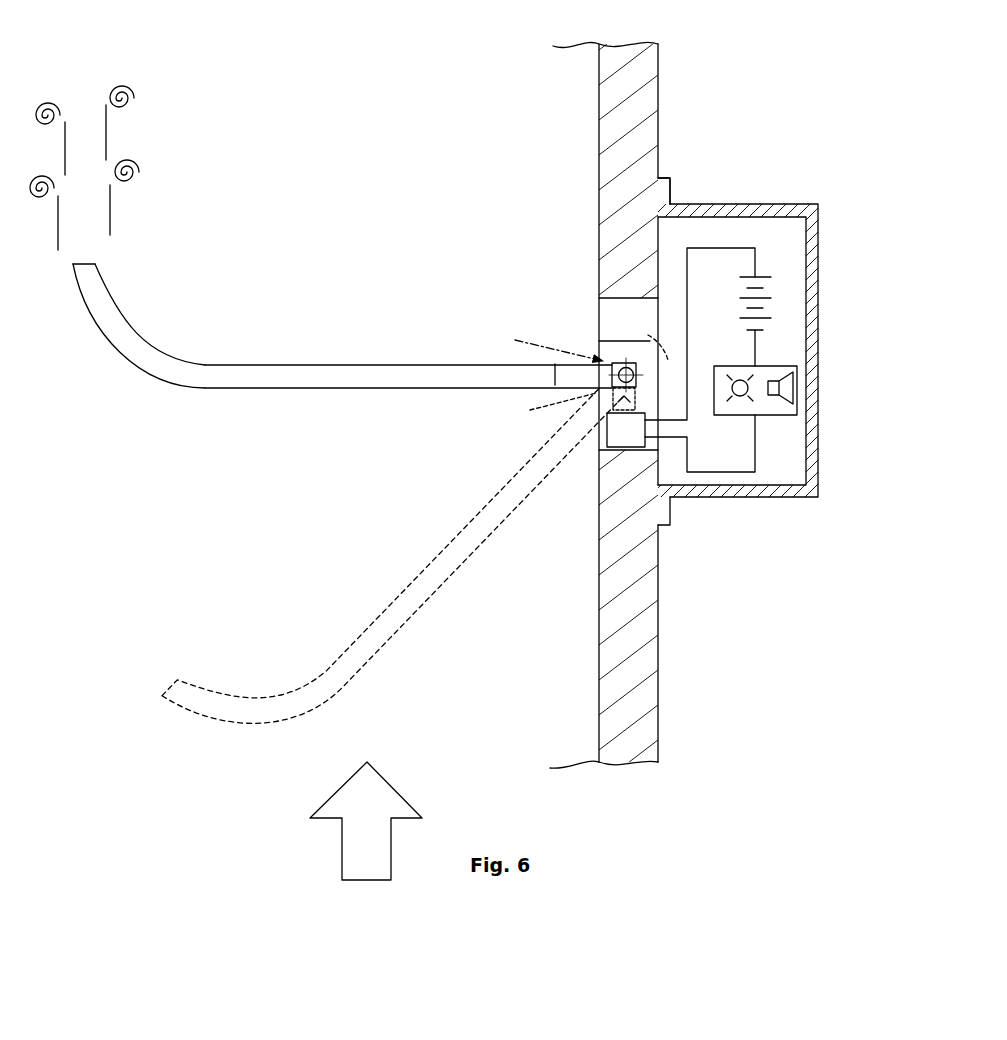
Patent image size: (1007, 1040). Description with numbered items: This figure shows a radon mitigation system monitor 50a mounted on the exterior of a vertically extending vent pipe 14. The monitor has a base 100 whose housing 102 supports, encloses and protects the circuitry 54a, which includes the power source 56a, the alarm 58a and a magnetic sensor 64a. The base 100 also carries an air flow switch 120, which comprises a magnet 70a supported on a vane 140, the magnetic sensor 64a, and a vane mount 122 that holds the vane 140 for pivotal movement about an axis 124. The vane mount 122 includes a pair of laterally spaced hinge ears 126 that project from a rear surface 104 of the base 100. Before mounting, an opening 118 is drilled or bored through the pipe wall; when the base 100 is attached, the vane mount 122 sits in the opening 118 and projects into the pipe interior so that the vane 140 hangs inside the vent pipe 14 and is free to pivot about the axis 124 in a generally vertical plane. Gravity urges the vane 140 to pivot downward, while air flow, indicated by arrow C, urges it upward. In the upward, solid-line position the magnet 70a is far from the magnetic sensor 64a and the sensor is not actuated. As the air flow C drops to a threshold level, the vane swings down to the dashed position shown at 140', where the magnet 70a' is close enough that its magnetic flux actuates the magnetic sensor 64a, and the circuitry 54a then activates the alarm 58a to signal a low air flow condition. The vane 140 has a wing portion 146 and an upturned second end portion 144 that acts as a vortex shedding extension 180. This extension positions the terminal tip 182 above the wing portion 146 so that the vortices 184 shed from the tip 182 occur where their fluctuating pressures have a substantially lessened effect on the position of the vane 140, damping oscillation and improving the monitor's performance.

The vent pipe 14 is at (628, 113).
The radon mitigation system monitor 50a is at (756, 277).
The circuitry 54a is at (749, 242).
The power source 56a is at (772, 293).
The alarm 58a is at (775, 362).
The magnetic sensor 64a is at (627, 436).
The magnet 70a is at (541, 408).
The magnet in threshold position 70a' is at (622, 321).
The base 100 is at (752, 334).
The housing 102 is at (787, 265).
The rear surface 104 is at (658, 462).
The opening 118 is at (598, 333).
The air flow switch 120 is at (565, 314).
The vane mount 122 is at (480, 400).
The axis 124 is at (538, 345).
The hinge ears 126 is at (620, 366).
The vane 140 is at (325, 349).
The vane in threshold pivotal position 140' is at (392, 546).
The upturned second end portion 144 is at (143, 357).
The wing portion 146 is at (265, 378).
The vortex shedding extension 180 is at (121, 325).
The tip 182 is at (95, 262).
The vortices 184 is at (110, 92).
The air flow C is at (367, 840).